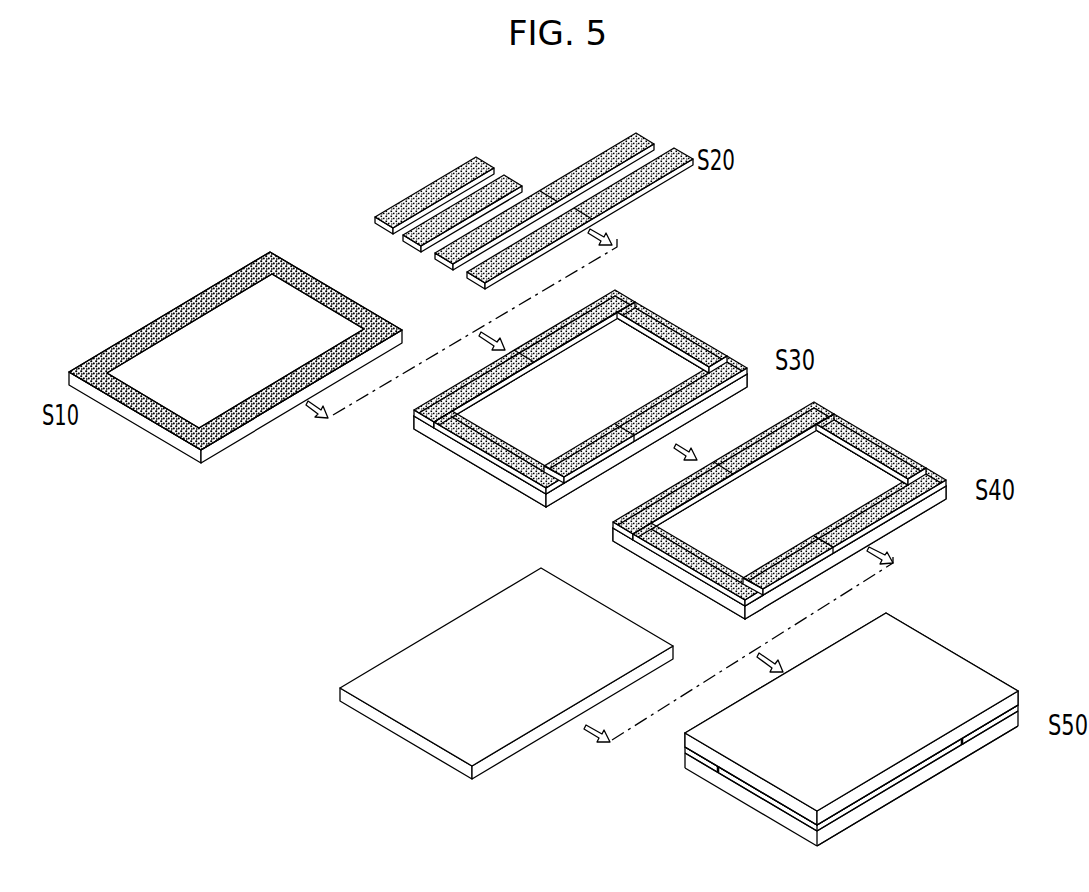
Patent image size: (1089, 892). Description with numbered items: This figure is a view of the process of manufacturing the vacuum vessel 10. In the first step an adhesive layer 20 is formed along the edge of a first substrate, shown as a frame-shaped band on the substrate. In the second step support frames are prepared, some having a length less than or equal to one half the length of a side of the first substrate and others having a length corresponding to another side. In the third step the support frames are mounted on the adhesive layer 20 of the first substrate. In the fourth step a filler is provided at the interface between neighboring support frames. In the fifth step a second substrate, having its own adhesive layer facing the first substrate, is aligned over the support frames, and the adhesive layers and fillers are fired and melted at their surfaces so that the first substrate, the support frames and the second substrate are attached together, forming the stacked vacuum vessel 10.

The vacuum vessel 10 is at (974, 636).
The adhesive layer 20 is at (224, 287).